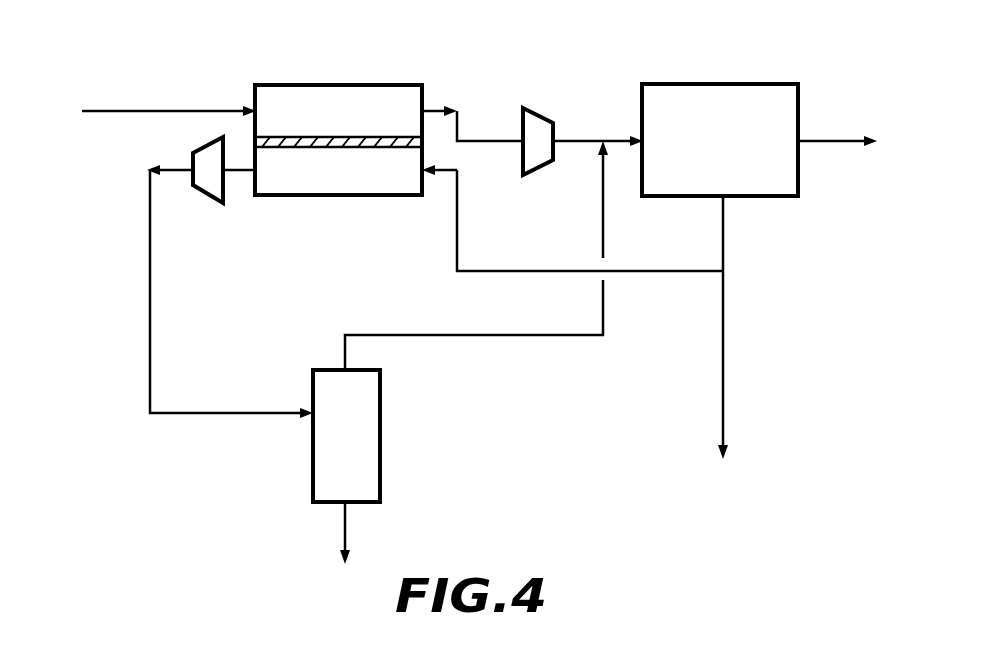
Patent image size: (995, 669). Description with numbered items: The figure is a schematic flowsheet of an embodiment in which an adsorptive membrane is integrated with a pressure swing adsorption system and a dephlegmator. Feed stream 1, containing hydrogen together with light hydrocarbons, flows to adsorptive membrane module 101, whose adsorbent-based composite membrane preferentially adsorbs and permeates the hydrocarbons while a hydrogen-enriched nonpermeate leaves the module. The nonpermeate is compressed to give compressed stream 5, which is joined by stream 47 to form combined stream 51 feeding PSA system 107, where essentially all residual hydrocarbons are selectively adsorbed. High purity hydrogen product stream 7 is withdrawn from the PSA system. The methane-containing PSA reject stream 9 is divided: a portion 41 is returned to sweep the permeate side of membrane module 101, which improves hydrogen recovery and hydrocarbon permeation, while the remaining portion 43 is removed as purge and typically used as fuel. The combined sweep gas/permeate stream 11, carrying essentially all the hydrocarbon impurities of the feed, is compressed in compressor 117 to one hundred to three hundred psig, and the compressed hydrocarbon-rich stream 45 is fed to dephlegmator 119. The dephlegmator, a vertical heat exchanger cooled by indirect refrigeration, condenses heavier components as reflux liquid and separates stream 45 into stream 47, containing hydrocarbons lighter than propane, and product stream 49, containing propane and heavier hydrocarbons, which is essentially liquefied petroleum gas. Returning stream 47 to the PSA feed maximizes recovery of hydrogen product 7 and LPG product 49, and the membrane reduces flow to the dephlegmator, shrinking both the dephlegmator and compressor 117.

The feed stream 1 is at (164, 110).
The adsorptive membrane module 101 is at (346, 85).
The compressor 117 is at (196, 148).
The sweep gas/permeate stream 11 is at (241, 168).
The compressed stream 5 is at (570, 146).
The combined stream 51 is at (604, 139).
The PSA system 107 is at (739, 153).
The hydrogen product stream 7 is at (819, 141).
The PSA reject stream 9 is at (724, 243).
The portion of PSA reject stream 41 is at (662, 270).
The remaining portion of PSA reject stream 43 is at (724, 355).
The compressed hydrocarbon-rich stream 45 is at (151, 324).
The light hydrocarbon stream 47 is at (491, 335).
The dephlegmator 119 is at (362, 442).
The product stream 49 is at (347, 526).